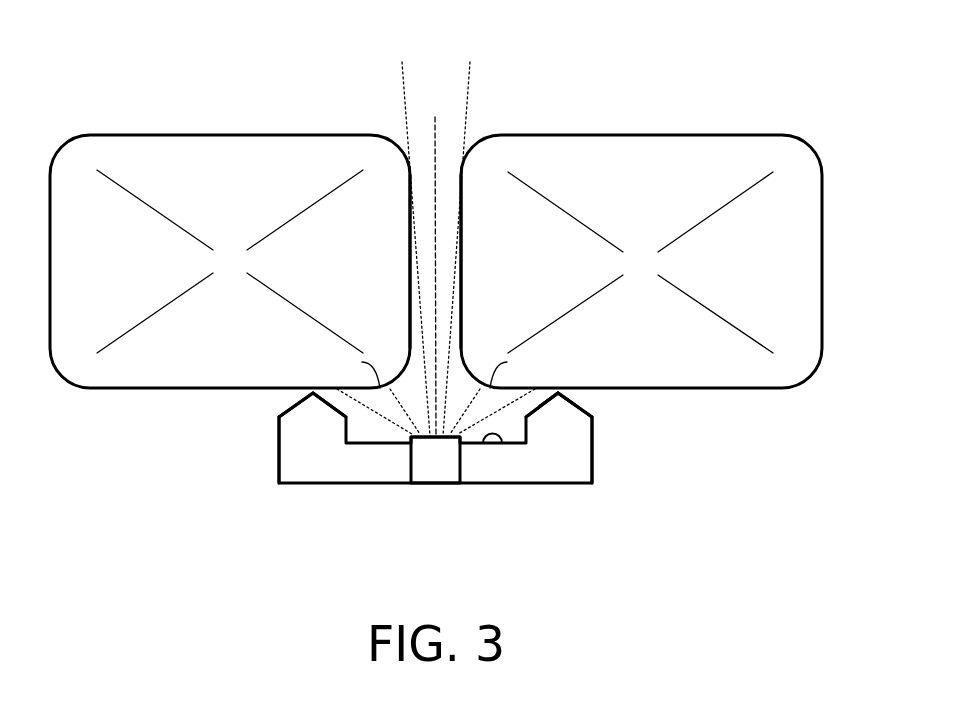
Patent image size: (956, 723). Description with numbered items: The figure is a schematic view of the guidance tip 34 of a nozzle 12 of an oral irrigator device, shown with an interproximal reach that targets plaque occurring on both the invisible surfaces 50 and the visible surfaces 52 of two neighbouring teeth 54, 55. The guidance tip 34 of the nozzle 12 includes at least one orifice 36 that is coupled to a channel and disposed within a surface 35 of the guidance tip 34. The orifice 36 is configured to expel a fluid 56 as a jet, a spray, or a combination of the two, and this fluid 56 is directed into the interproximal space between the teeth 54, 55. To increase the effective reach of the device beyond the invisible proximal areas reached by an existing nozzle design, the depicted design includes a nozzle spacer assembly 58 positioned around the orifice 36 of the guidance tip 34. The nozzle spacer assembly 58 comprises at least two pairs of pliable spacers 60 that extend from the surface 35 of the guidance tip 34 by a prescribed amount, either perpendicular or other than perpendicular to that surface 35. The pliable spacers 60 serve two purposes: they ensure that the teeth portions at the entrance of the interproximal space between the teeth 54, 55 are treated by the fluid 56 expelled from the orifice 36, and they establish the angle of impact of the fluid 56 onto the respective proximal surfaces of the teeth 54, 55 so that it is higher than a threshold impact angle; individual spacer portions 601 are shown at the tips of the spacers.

The nozzle 12 is at (501, 466).
The guidance tip 34 is at (572, 470).
The surface 35 is at (496, 441).
The orifice 36 is at (436, 447).
The invisible surfaces 50 is at (410, 262).
The visible surfaces 52 is at (362, 362).
The tooth 54 is at (653, 182).
The tooth 55 is at (244, 182).
The fluid 56 is at (448, 114).
The nozzle spacer assembly 58 is at (580, 397).
The pliable spacers 60 is at (603, 420).
The wall segment 601 is at (335, 436).